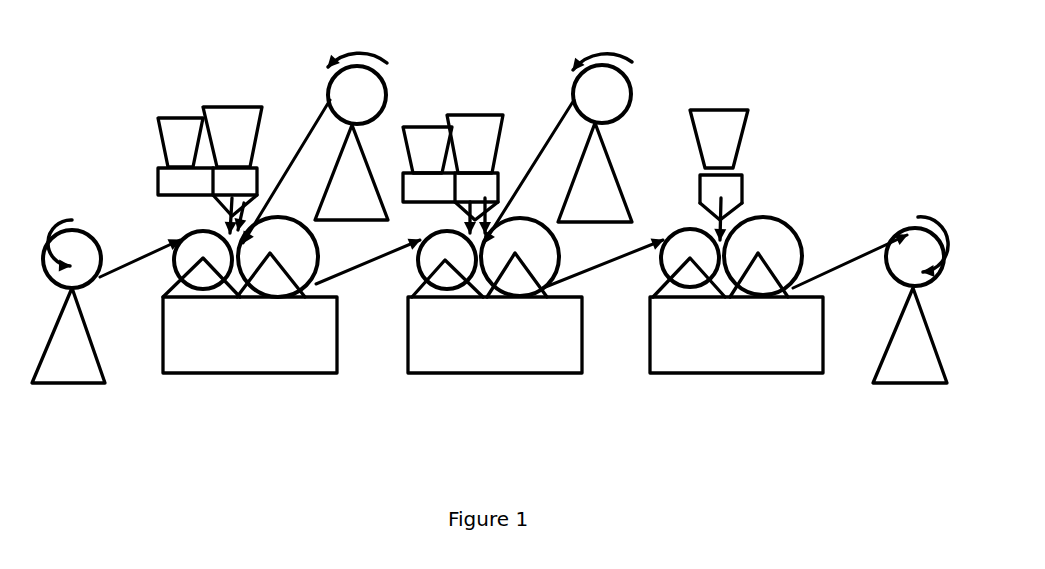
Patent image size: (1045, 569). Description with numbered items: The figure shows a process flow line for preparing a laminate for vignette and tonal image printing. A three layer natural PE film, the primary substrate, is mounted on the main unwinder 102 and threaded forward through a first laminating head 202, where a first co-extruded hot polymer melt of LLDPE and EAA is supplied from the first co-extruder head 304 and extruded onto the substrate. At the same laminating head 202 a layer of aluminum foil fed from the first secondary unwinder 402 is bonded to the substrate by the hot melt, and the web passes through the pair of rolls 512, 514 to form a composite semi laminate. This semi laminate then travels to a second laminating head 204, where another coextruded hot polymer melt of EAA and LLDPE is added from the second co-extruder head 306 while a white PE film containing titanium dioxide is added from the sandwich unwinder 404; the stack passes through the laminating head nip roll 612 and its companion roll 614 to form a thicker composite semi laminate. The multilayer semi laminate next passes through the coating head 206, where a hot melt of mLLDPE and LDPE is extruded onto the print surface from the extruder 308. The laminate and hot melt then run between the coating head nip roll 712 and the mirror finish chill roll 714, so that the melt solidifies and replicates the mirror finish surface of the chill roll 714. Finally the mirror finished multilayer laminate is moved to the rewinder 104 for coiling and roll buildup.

The main unwinder 102 is at (73, 363).
The rewinder 104 is at (916, 371).
The first laminating head 202 is at (231, 362).
The second laminating head 204 is at (497, 353).
The coating head 206 is at (733, 343).
The first co-extruder head 304 is at (235, 128).
The second co-extruder head 306 is at (458, 112).
The extruder 308 is at (725, 133).
The first secondary unwinder 402 is at (367, 88).
The sandwich unwinder 404 is at (600, 88).
The first metering roller 512 is at (203, 262).
The first coating roller 514 is at (278, 279).
The laminating head NIP roll 612 is at (455, 262).
The second coating roller 614 is at (540, 262).
The coating head NIP roll 712 is at (690, 263).
The mirror finish chill roll 714 is at (788, 262).